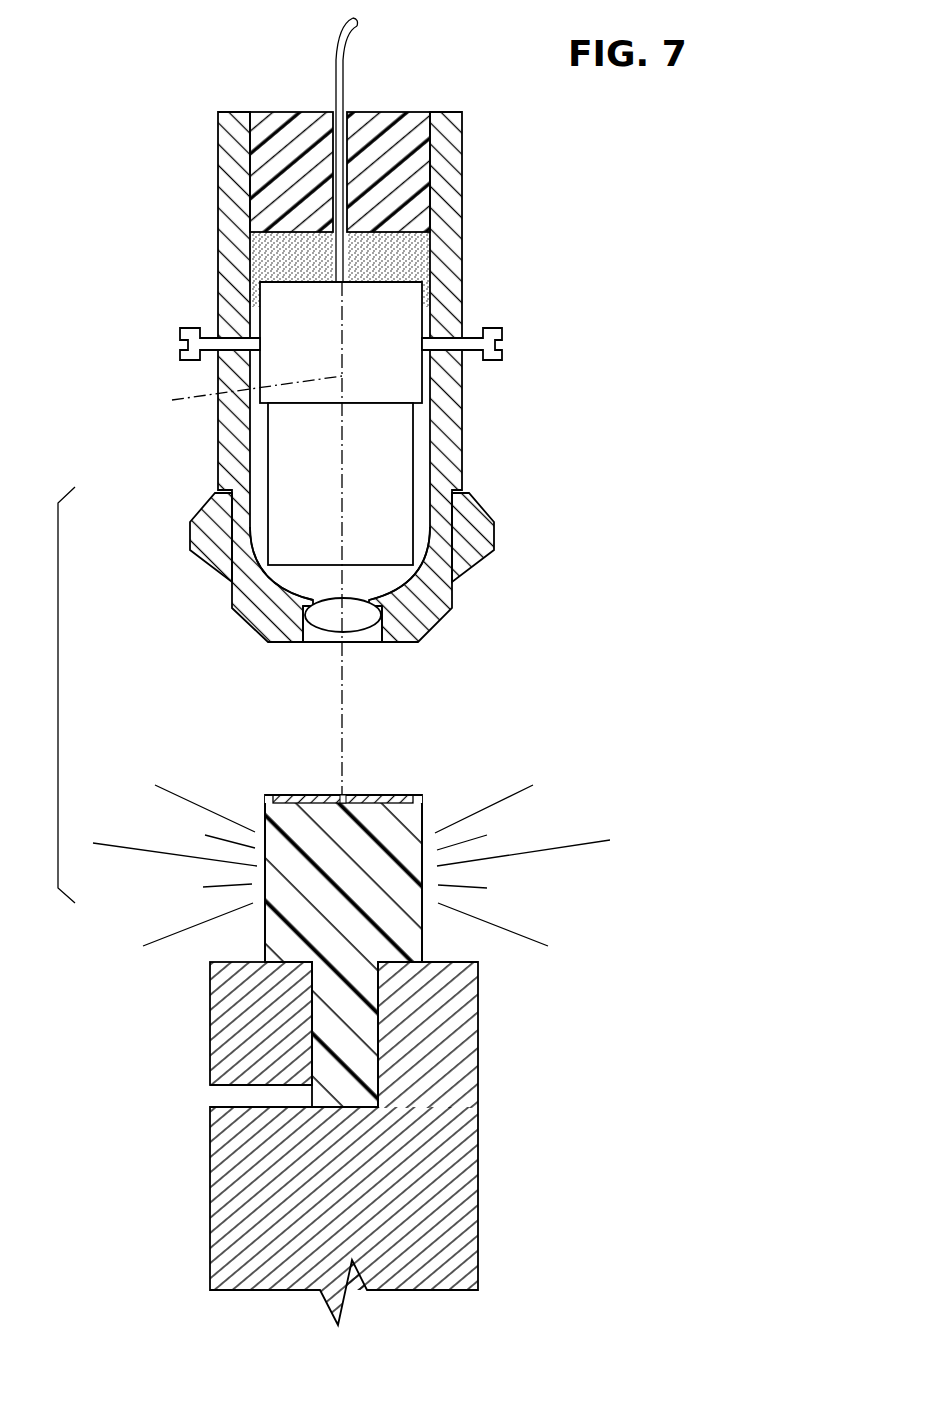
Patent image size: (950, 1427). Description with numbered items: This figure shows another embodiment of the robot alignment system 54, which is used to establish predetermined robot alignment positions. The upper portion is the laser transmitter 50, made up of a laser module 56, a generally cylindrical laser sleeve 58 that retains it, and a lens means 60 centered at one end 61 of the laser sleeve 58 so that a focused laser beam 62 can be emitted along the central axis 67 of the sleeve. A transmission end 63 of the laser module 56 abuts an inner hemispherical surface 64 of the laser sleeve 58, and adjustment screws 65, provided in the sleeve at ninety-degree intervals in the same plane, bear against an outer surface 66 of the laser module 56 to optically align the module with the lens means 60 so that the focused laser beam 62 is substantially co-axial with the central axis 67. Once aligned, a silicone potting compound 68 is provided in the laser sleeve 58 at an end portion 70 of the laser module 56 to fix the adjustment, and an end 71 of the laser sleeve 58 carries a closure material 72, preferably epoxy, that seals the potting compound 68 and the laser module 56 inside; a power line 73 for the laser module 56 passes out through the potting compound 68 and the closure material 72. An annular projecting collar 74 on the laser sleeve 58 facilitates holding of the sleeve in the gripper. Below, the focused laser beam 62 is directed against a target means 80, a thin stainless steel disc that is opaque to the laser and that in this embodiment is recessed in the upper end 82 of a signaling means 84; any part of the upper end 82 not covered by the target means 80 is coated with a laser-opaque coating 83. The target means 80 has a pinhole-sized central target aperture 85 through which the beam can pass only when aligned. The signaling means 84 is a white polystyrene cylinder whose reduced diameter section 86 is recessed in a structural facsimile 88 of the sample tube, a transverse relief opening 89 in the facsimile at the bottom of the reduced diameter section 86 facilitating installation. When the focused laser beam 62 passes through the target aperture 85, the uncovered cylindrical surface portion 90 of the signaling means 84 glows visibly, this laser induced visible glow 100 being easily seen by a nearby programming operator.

The laser transmitter 50 is at (538, 199).
The robot alignment system 54 is at (45, 711).
The laser module 56 is at (418, 440).
The laser sleeve 58 is at (463, 303).
The lens means 60 is at (355, 625).
The end of the laser sleeve 61 is at (403, 643).
The focused laser beam 62 is at (342, 715).
The transmission end 63 is at (298, 565).
The inner hemispherical surface 64 is at (395, 583).
The adjustment screws 65 is at (180, 332).
The outer surface of the laser module 66 is at (422, 384).
The central axis of the laser sleeve 67 is at (238, 392).
The silicone potting compound 68 is at (383, 270).
The end portion of the laser module 70 is at (293, 283).
The end of the laser sleeve 71 is at (237, 110).
The closure material 72 is at (398, 118).
The power line 73 is at (340, 60).
The annular projecting collar 74 is at (490, 517).
The target means 80 is at (365, 795).
The upper end of the signaling means 82 is at (268, 815).
The coating 83 is at (268, 795).
The signaling means 84 is at (428, 937).
The central target aperture 85 is at (343, 795).
The reduced diameter section 86 is at (232, 960).
The structural facsimile of the sample tube 88 is at (208, 1183).
The transverse relief opening 89 is at (208, 1099).
The uncovered cylindrical surface portion 90 is at (265, 869).
The laser induced visible glow 100 is at (560, 847).